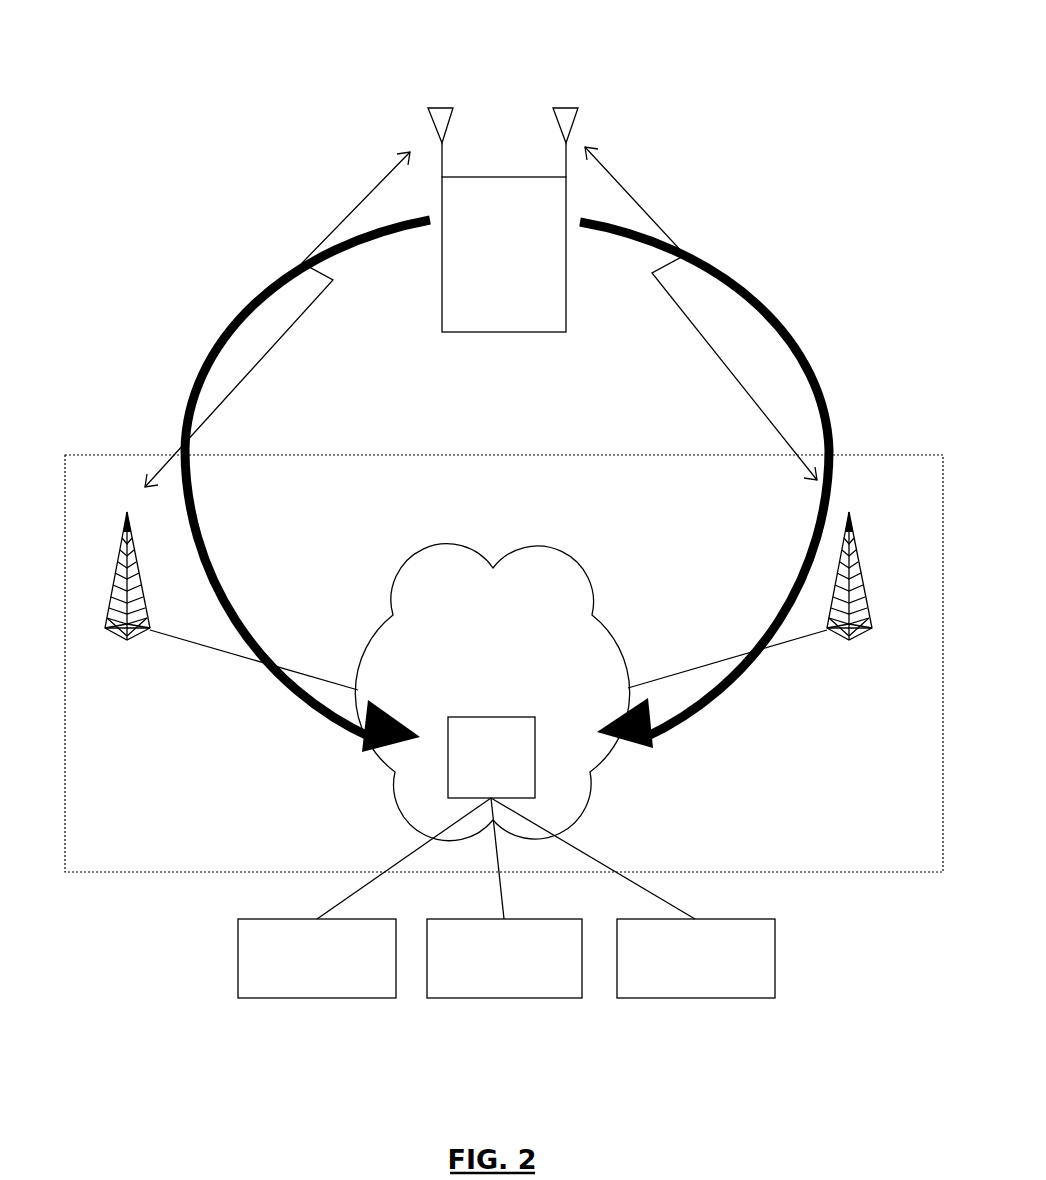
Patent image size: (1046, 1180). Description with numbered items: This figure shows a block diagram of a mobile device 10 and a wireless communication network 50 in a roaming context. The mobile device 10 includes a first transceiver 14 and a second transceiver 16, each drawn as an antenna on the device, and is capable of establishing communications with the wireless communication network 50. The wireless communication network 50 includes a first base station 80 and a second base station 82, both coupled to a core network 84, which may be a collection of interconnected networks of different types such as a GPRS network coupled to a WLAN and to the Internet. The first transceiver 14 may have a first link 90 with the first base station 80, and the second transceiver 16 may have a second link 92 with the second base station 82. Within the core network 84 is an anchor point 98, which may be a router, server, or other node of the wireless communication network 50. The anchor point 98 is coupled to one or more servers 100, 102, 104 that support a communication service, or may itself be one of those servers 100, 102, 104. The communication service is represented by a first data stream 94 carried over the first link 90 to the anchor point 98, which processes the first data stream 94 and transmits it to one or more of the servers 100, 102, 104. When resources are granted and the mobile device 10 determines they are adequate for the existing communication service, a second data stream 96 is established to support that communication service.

The mobile device 10 is at (516, 50).
The first transceiver 14 is at (430, 122).
The second transceiver 16 is at (578, 116).
The wireless communication network 50 is at (540, 454).
The first base station 80 is at (135, 567).
The second base station 82 is at (832, 572).
The core network 84 is at (432, 541).
The first link 90 is at (324, 240).
The second link 92 is at (660, 238).
The first data stream 94 is at (224, 331).
The second data stream 96 is at (772, 320).
The anchor point 98 is at (468, 717).
The server 100 is at (238, 940).
The server 102 is at (442, 1000).
The server 104 is at (775, 948).